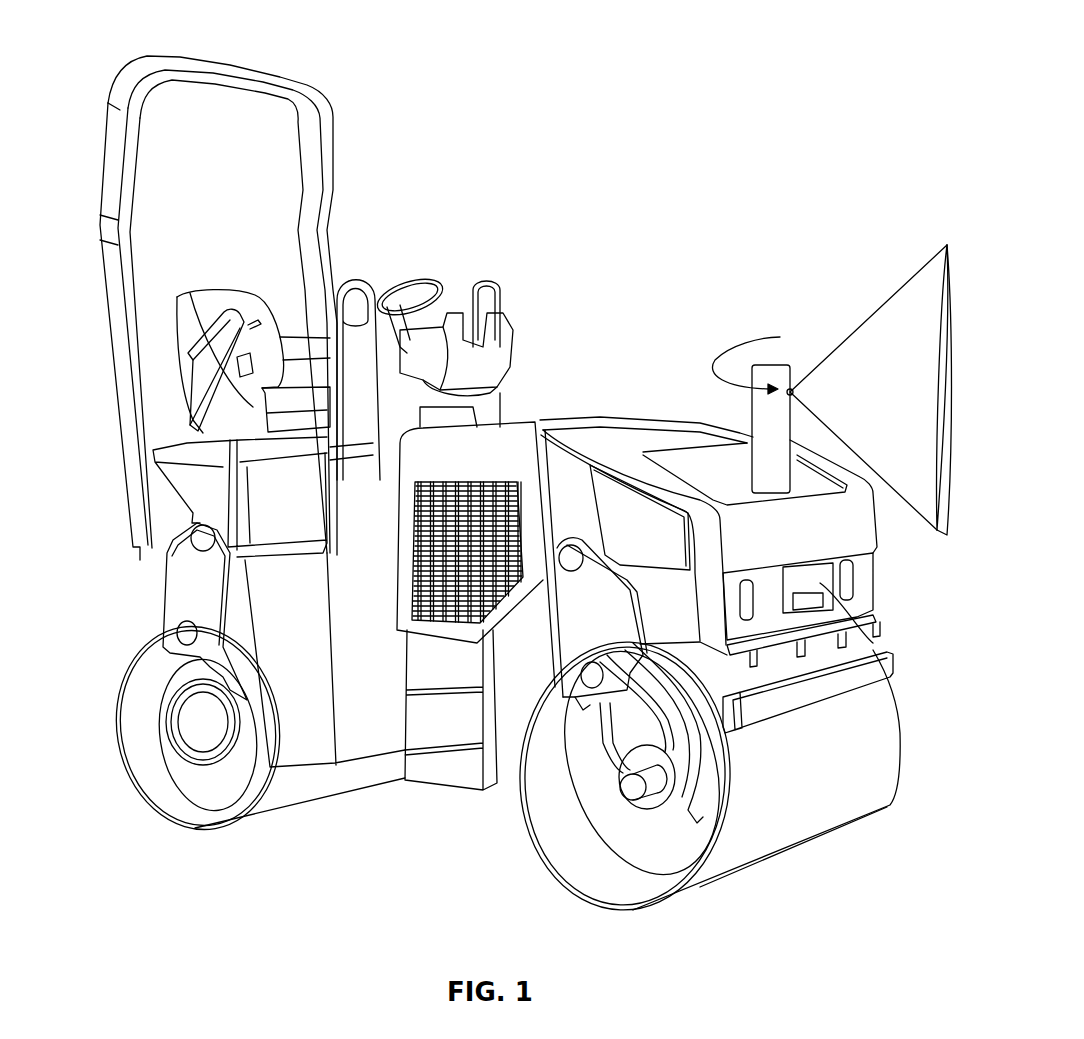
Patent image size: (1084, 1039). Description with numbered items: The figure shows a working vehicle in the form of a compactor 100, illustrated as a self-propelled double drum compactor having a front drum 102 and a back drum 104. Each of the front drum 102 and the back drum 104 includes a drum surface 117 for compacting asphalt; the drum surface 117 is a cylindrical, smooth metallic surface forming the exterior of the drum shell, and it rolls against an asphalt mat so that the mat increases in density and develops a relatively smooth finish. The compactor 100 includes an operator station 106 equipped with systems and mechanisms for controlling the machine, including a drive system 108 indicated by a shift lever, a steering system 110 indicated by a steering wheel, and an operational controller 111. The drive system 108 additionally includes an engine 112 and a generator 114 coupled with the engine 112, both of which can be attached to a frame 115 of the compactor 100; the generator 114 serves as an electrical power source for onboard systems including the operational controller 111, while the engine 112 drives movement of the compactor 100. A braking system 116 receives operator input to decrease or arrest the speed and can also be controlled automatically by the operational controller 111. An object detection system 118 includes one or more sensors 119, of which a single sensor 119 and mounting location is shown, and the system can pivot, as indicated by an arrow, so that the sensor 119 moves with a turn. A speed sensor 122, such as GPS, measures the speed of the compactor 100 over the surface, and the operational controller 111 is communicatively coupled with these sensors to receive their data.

The compactor 100 is at (771, 33).
The front drum 102 is at (821, 848).
The back drum 104 is at (115, 747).
The operator station 106 is at (447, 275).
The drive system 108 is at (227, 293).
The steering system 110 is at (403, 283).
The operational controller 111 is at (463, 227).
The engine 112 is at (887, 625).
The generator 114 is at (880, 660).
The frame 115 is at (842, 528).
The braking system 116 is at (645, 842).
The drum surface 117 is at (315, 788).
The object detection system 118 is at (855, 309).
The sensor 119 is at (793, 387).
The speed sensor 122 is at (513, 320).